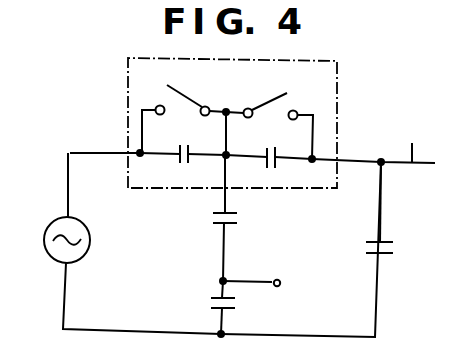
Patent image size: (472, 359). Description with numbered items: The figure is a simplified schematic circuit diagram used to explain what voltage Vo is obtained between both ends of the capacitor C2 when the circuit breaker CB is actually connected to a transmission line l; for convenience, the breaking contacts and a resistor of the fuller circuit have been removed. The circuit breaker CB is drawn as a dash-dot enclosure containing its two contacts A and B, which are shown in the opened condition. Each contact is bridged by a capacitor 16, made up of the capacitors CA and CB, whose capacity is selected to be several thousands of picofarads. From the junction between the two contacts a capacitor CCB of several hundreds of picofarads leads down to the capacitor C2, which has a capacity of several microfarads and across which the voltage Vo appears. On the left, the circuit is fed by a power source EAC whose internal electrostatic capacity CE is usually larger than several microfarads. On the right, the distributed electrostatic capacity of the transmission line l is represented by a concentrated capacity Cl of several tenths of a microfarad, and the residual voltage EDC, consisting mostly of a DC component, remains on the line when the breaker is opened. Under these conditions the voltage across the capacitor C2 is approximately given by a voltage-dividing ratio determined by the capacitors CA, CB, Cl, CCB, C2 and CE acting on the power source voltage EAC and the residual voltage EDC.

The circuit breaker CB is at (245, 106).
The contact B is at (205, 90).
The contact A is at (277, 90).
The capacitor CA is at (274, 144).
The capacitor 16 is at (180, 164).
The capacitor CCB is at (238, 217).
The capacitor C2 is at (209, 302).
The voltage Vo is at (270, 285).
The power source EAC is at (53, 220).
The internal electrostatic capacity CE is at (43, 249).
The residual voltage EDC is at (406, 202).
The concentrated capacity Cl is at (394, 250).
The transmission line l is at (414, 142).